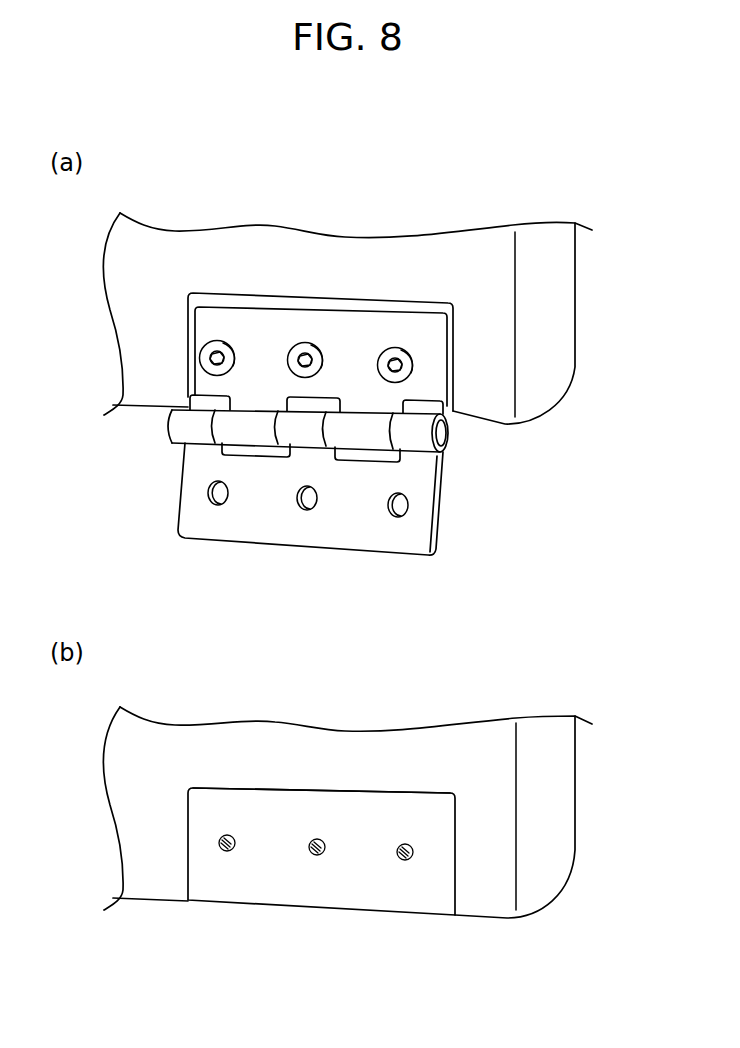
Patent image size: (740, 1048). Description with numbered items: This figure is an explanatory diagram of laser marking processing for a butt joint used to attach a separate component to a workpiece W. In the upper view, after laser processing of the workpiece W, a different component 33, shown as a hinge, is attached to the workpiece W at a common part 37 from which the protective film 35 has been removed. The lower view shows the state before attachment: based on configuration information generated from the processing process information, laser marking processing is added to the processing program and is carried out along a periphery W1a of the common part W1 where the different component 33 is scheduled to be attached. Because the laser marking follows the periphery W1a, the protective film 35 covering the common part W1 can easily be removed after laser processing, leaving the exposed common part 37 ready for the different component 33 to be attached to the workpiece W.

The workpiece W is at (572, 289).
The protective film 35 is at (490, 330).
The common part 37 is at (420, 307).
The different component 33 is at (447, 467).
The common part W1 is at (333, 883).
The periphery of the common part W1a is at (343, 790).